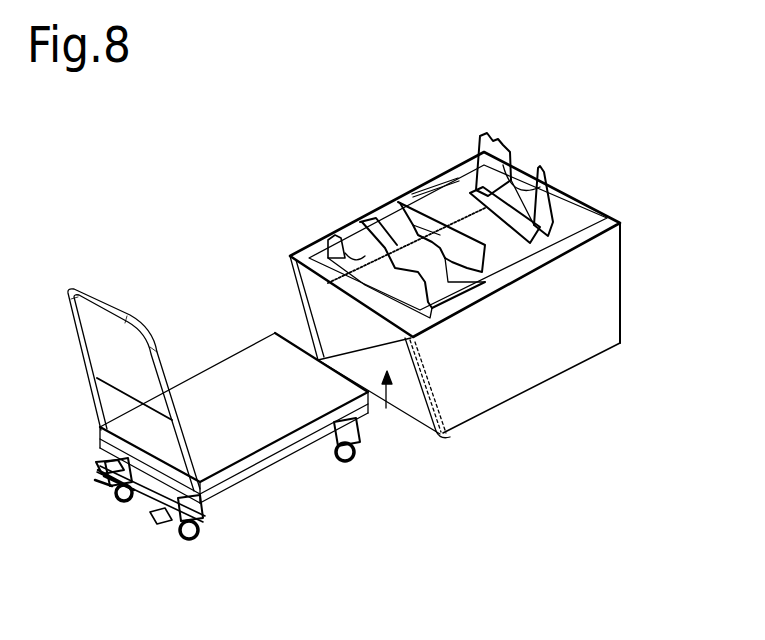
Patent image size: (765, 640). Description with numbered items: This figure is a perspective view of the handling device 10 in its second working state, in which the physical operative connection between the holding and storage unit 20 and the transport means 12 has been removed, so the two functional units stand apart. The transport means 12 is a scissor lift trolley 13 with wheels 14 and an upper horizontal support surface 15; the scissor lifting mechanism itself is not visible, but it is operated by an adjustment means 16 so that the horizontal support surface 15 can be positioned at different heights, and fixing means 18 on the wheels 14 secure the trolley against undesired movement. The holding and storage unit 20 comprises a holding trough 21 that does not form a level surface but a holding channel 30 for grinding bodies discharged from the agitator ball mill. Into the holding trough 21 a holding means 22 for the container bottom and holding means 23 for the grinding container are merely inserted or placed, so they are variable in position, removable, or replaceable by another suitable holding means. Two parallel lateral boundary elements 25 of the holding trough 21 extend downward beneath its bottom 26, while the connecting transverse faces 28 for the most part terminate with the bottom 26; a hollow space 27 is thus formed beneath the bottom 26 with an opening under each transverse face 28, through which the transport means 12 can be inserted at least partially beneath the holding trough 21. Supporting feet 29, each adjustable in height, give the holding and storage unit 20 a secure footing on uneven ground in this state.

The handling device 10 is at (506, 546).
The transport means 12 is at (199, 415).
The scissor lift trolley 13 is at (199, 415).
The wheels 14 is at (112, 498).
The upper horizontal support surface 15 is at (266, 357).
The adjustment means 16 is at (108, 478).
The fixing means 18 is at (162, 513).
The holding and storage unit 20 is at (461, 281).
The holding trough 21 is at (406, 173).
The holding means 22 is at (545, 193).
The holding means 23 is at (365, 254).
The lateral boundary elements 25 is at (560, 333).
The bottom 26 is at (450, 217).
The hollow space 27 is at (380, 405).
The transverse boundary element 28 is at (316, 290).
The supporting feet 29 is at (445, 437).
The holding channel 30 is at (400, 302).